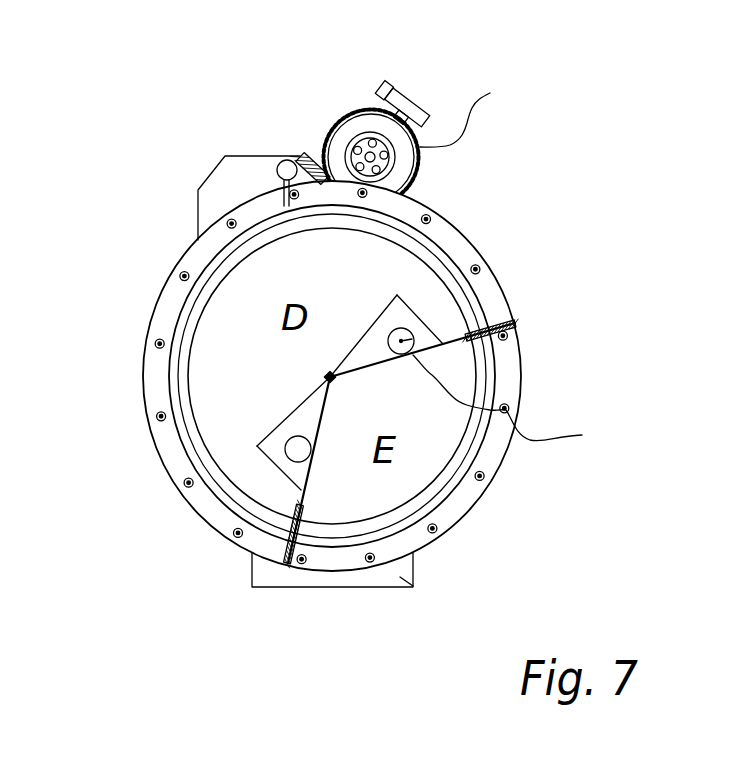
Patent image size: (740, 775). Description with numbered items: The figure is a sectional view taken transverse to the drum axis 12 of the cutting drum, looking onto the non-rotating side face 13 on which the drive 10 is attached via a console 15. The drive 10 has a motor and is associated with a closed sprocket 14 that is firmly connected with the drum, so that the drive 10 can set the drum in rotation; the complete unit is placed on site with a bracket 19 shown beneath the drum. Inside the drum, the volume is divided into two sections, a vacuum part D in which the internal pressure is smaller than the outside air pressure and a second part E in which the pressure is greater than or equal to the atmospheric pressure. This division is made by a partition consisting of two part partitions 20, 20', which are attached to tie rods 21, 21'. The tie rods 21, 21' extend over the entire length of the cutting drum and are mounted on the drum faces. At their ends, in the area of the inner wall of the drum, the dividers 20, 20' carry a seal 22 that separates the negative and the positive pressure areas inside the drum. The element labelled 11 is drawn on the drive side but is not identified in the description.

The drive unit 10 is at (449, 109).
The drive unit 11 is at (366, 146).
The drum axis 12 is at (326, 374).
The side face 13 is at (180, 433).
The closed sprocket 14 is at (467, 240).
The console 15 is at (245, 157).
The bracket 19 is at (413, 587).
The part partition 20 is at (517, 405).
The part partition 20' is at (325, 472).
The tie rod 21 is at (497, 295).
The tie rod 21' is at (261, 427).
The seal 22 is at (514, 325).